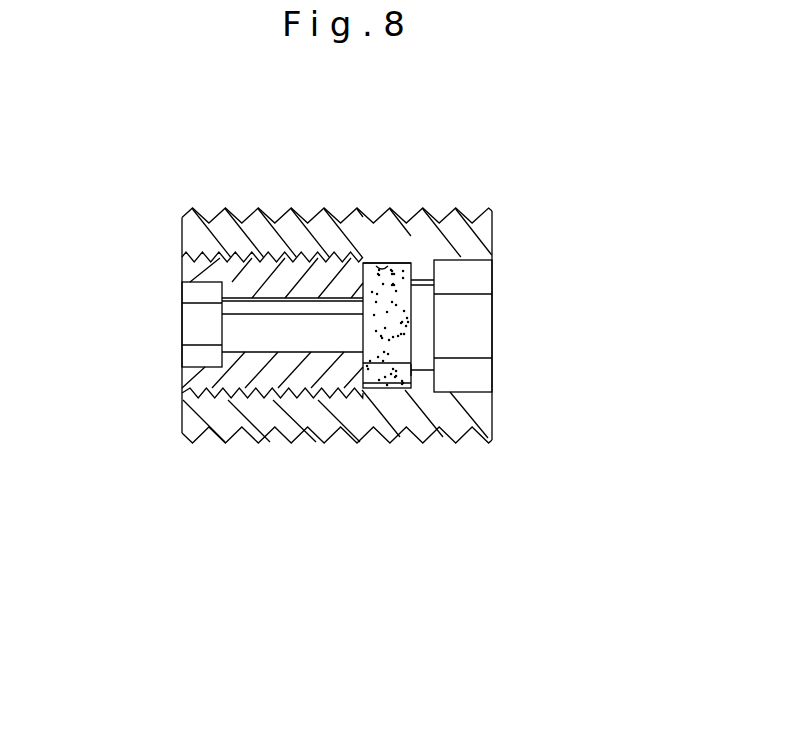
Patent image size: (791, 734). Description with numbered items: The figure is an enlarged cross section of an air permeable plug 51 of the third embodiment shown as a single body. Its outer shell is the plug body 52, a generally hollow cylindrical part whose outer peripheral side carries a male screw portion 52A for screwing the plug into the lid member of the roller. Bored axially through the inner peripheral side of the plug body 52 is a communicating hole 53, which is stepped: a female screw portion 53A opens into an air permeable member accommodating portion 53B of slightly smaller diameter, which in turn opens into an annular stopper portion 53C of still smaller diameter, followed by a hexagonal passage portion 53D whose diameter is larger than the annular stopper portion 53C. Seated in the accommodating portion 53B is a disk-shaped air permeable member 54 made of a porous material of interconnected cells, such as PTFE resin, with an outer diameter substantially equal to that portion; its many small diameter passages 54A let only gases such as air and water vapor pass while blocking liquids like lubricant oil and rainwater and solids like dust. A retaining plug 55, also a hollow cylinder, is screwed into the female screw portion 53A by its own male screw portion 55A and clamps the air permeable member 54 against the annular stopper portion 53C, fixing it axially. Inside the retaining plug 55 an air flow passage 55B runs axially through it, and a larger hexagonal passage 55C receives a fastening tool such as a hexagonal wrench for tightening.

The air permeable plug 51 is at (430, 186).
The plug body 52 is at (317, 232).
The male screw portion 52A is at (465, 211).
The communicating hole 53 is at (505, 340).
The female screw portion 53A is at (228, 390).
The air permeable member accommodating portion 53B is at (380, 268).
The annular stopper portion 53C is at (422, 350).
The hexagonal passage portion 53D is at (463, 372).
The air permeable member 54 is at (389, 350).
The small diameter passages 54A is at (399, 299).
The retaining plug 55 is at (301, 368).
The male screw portion 55A is at (262, 393).
The air flow passage 55B is at (258, 327).
The hexagonal passage 55C is at (197, 317).